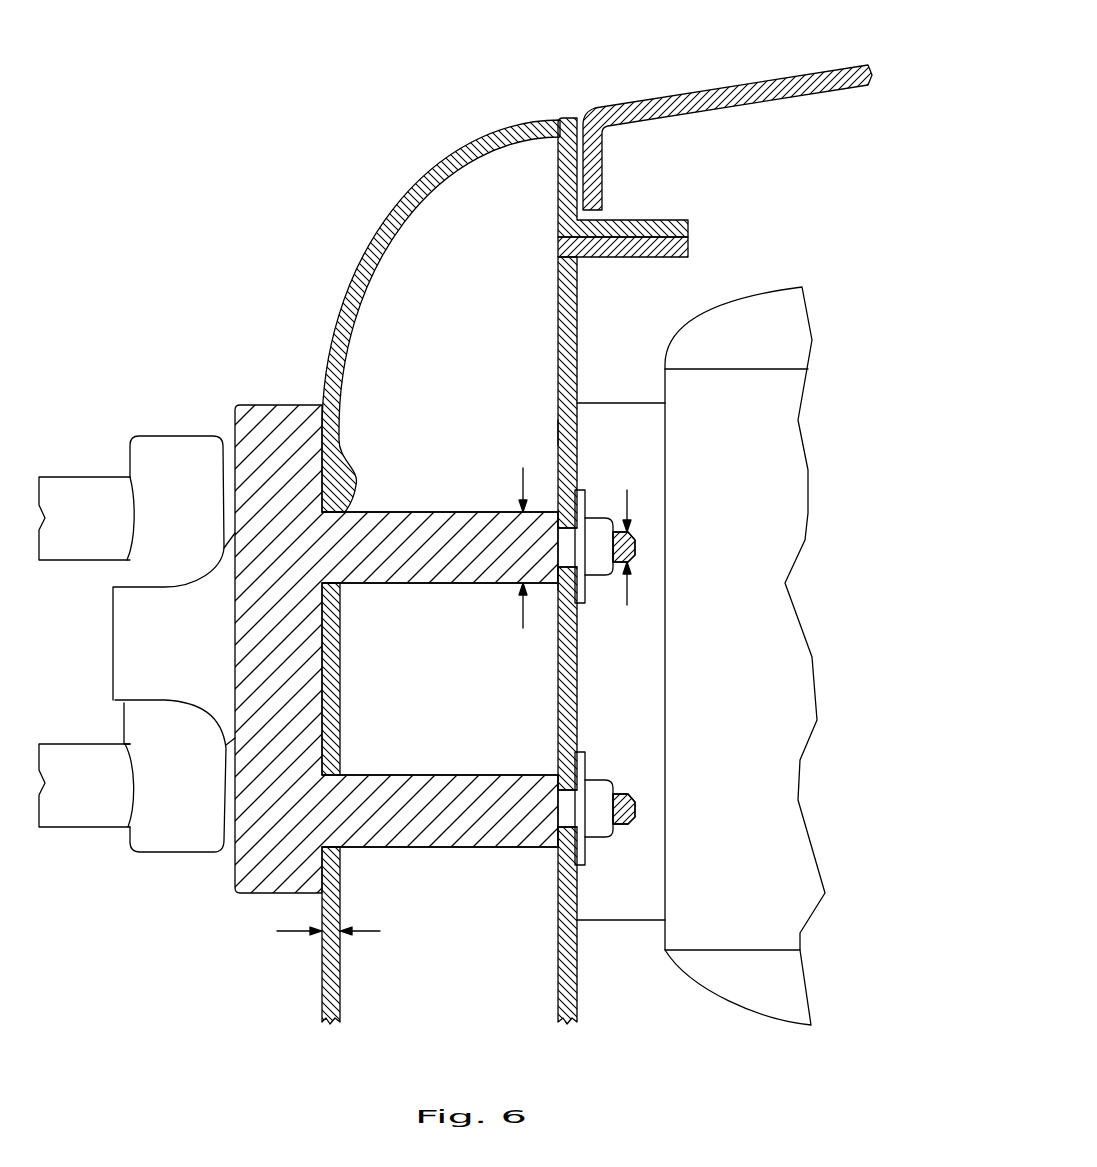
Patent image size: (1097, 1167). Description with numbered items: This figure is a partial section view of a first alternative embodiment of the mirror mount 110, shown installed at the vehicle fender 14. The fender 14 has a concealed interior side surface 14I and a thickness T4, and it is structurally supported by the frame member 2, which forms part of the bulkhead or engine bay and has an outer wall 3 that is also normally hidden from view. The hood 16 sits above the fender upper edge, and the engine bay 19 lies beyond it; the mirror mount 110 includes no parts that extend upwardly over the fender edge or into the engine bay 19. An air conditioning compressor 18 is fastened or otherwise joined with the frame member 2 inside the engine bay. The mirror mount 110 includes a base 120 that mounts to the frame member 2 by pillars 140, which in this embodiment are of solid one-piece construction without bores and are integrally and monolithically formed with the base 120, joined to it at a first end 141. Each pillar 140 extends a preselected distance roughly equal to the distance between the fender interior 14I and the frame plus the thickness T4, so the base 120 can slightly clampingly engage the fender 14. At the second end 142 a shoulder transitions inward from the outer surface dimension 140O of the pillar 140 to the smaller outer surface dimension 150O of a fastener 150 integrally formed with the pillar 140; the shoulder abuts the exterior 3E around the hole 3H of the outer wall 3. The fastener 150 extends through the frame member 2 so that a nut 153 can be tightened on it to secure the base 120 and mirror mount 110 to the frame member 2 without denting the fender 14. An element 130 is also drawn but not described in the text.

The frame member 2 is at (558, 283).
The outer wall 3 is at (558, 370).
The exterior 3E is at (560, 432).
The hole 3H is at (570, 568).
The fender 14 is at (331, 338).
The interior side surface 14I is at (343, 963).
The hood 16 is at (743, 86).
The air conditioning compressor 18 is at (690, 315).
The engine bay 19 is at (832, 222).
The mirror mount 110 is at (120, 895).
The base 120 is at (257, 895).
The fan motor 130 is at (87, 762).
The pillar 140 is at (467, 512).
The outer surface dimension 140O is at (521, 559).
The first end 141 is at (345, 588).
The second end 142 is at (558, 590).
The fastener 150 is at (622, 530).
The outer surface dimension 150O is at (634, 560).
The nut 153 is at (610, 573).
The thickness T4 is at (342, 932).